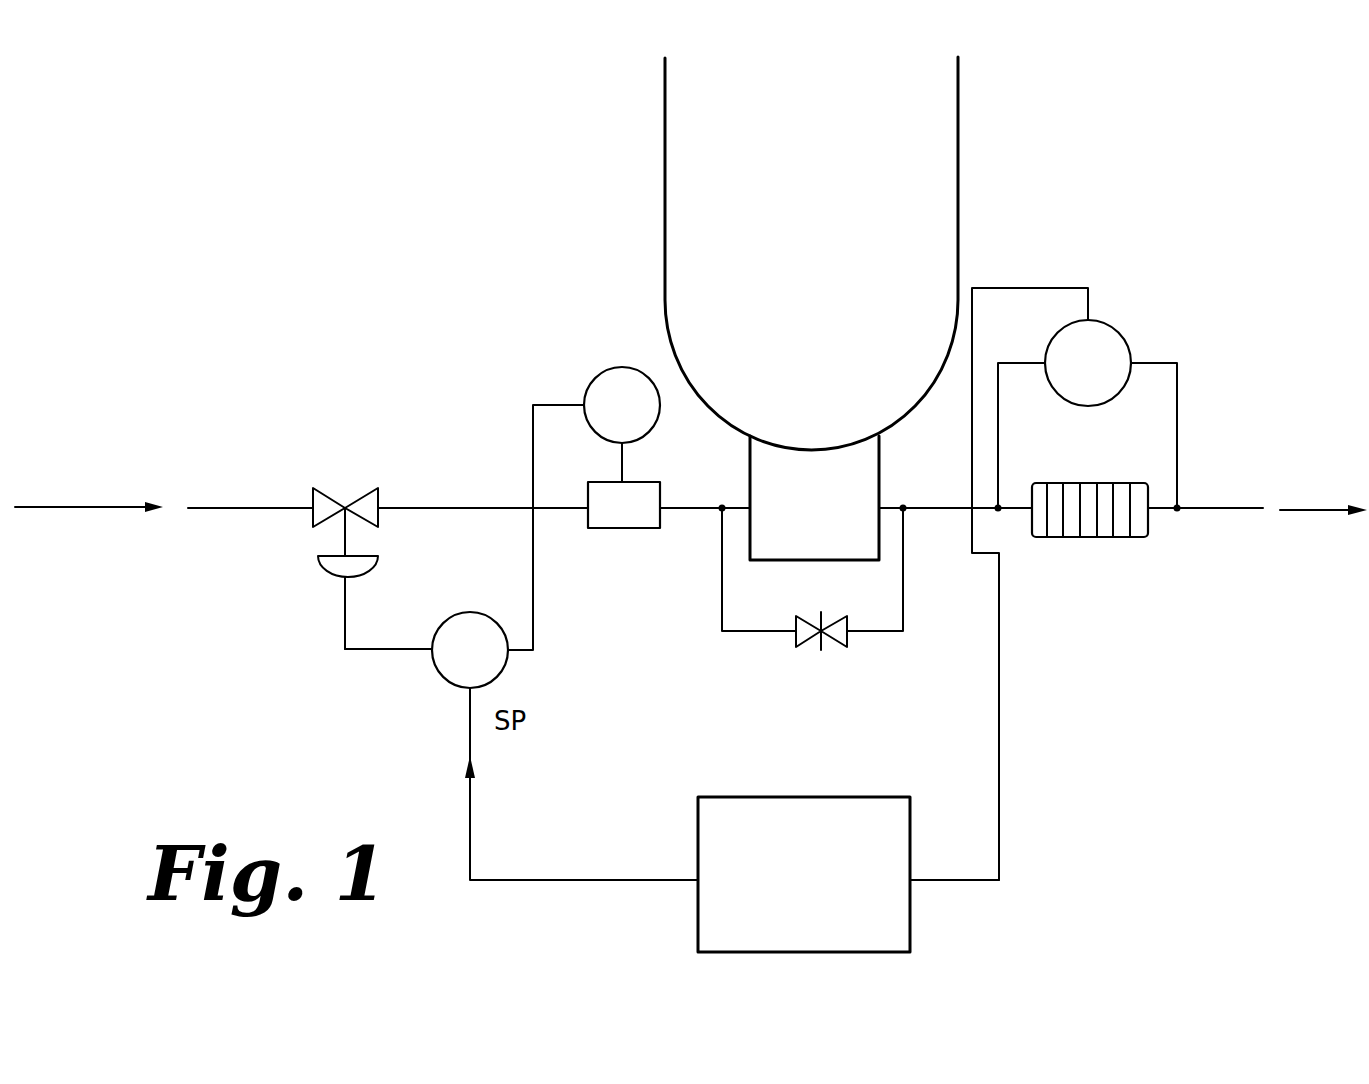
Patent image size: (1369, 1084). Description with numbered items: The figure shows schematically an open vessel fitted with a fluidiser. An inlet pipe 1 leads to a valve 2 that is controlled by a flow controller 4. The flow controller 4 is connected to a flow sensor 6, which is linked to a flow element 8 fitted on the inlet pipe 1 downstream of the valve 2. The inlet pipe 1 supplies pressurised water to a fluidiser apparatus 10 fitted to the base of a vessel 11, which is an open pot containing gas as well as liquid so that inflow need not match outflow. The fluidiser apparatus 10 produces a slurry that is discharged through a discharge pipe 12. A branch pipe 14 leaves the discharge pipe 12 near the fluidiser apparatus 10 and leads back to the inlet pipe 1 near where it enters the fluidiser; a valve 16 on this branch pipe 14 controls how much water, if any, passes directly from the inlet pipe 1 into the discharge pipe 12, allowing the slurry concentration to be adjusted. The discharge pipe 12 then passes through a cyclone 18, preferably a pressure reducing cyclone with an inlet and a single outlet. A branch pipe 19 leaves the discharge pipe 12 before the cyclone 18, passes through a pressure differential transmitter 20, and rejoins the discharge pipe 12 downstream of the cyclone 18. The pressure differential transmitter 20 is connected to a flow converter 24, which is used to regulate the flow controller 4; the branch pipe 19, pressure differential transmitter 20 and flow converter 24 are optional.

The inlet pipe 1 is at (240, 470).
The valve 2 is at (338, 497).
The flow controller 4 is at (440, 674).
The flow sensor 6 is at (600, 366).
The flow element 8 is at (630, 528).
The fluidiser apparatus 10 is at (870, 470).
The vessel 11 is at (960, 197).
The discharge pipe 12 is at (943, 512).
The branch pipe 14 is at (722, 585).
The valve 16 is at (797, 635).
The cyclone 18 is at (1120, 537).
The branch pipe 19 is at (998, 440).
The pressure differential transmitter 20 is at (1120, 335).
The flow converter 24 is at (825, 800).